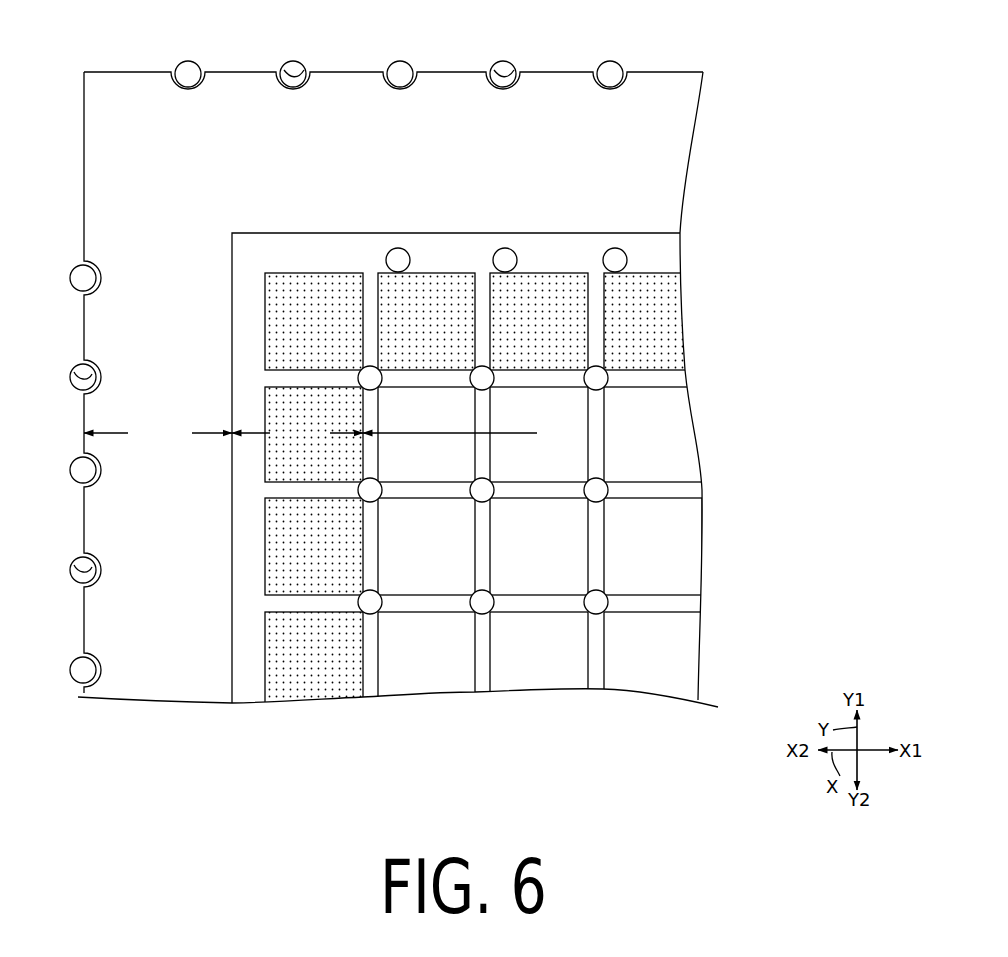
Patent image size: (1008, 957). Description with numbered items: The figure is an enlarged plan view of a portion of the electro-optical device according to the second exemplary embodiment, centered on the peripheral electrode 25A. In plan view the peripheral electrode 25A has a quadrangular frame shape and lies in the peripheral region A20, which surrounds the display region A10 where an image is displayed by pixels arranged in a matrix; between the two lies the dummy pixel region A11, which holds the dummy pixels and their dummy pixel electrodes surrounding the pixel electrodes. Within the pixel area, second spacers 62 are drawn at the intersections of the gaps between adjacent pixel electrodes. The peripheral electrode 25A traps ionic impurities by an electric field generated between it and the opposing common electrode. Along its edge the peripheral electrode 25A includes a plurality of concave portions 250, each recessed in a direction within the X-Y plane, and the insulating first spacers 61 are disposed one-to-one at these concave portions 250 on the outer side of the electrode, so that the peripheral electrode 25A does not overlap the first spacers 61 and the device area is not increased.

The peripheral electrode 25A is at (665, 135).
The concave portion 250 is at (175, 71).
The first spacer 61 is at (296, 74).
The bump / connection ball 62 is at (617, 260).
The peripheral region A20 is at (158, 434).
The dummy pixel region A11 is at (297, 434).
The display region A10 is at (475, 434).